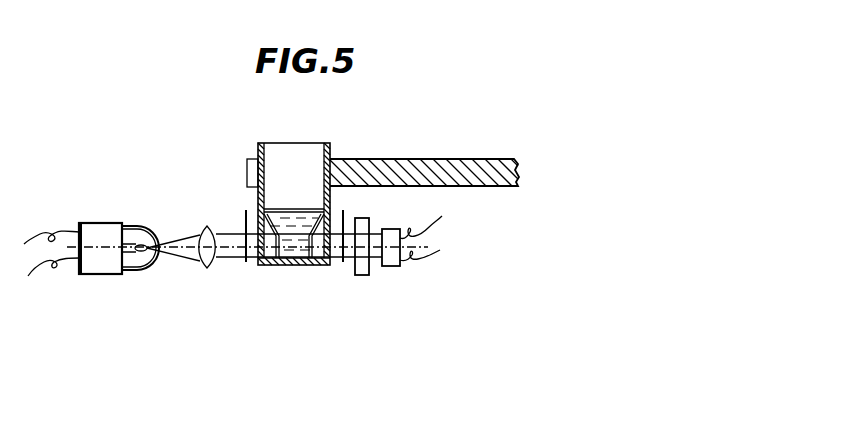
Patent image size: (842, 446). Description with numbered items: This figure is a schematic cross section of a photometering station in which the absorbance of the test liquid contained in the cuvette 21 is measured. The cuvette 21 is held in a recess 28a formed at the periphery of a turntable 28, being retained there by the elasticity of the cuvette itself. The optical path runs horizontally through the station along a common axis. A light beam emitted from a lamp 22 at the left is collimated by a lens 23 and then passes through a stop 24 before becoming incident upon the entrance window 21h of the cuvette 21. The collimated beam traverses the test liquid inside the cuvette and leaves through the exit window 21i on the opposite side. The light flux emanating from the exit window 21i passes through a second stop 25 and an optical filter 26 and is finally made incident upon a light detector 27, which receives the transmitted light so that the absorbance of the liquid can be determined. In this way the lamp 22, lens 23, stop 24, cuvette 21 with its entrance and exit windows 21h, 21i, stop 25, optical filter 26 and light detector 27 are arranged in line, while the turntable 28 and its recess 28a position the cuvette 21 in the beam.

The cuvette 21 is at (303, 150).
The entrance window 21h is at (270, 266).
The exit window 21i is at (321, 266).
The lamp 22 is at (103, 262).
The lens 23 is at (203, 268).
The stop 24 is at (246, 262).
The stop 25 is at (344, 264).
The optical filter 26 is at (362, 276).
The light detector 27 is at (398, 267).
The turntable 28 is at (443, 160).
The recess 28a is at (247, 170).